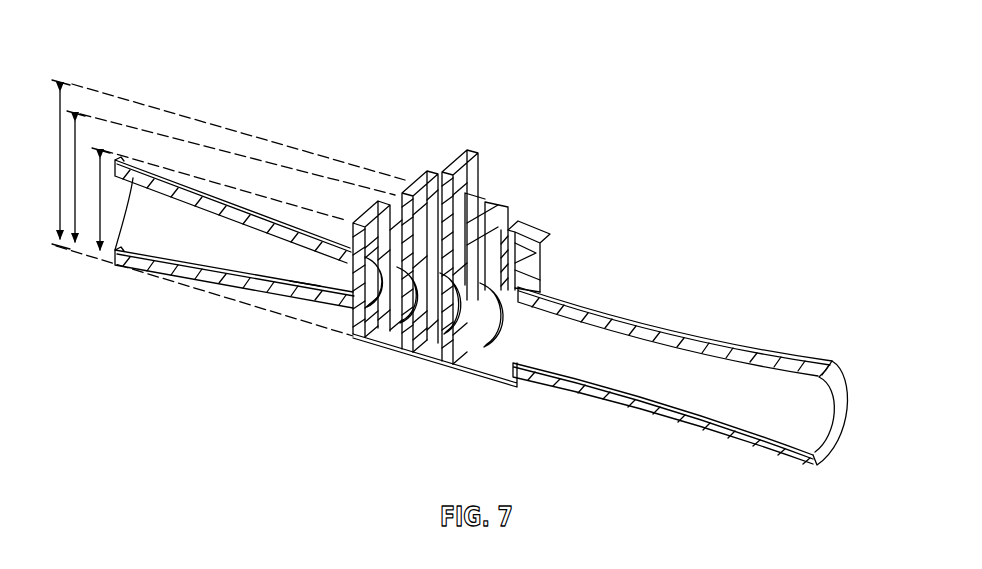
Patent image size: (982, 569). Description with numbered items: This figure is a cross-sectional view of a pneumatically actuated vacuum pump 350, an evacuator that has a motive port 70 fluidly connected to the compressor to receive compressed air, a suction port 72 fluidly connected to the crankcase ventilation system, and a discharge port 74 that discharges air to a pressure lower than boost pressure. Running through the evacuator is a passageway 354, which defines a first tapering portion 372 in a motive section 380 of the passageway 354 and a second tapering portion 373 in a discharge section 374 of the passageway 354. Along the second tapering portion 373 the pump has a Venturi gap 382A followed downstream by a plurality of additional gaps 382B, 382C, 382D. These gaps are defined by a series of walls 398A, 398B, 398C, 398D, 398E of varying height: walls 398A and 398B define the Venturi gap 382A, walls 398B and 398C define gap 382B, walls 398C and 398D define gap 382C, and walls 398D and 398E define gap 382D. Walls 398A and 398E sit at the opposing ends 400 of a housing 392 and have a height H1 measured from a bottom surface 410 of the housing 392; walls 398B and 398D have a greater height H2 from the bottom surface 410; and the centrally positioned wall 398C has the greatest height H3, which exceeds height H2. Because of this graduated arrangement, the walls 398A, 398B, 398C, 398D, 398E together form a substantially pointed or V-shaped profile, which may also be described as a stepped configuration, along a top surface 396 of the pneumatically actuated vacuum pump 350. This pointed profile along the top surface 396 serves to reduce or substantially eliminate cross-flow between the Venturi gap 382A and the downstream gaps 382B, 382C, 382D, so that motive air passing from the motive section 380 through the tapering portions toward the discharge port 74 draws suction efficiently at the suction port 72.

The pneumatically actuated vacuum pump 350 is at (708, 132).
The motive port 70 is at (136, 210).
The suction port 72 is at (531, 230).
The discharge port 74 is at (847, 398).
The first tapering portion 372 is at (187, 246).
The second tapering portion 373 is at (770, 405).
The discharge section 374 is at (586, 384).
The motive section 380 is at (301, 284).
The passageway 354 is at (232, 248).
The Venturi gap 382A is at (380, 203).
The gap 382B is at (420, 202).
The gap 382C is at (482, 205).
The gap 382D is at (532, 228).
The housing 392 is at (538, 290).
The top surface 396 is at (543, 246).
The wall 398A is at (366, 212).
The wall 398B is at (410, 186).
The wall 398C is at (453, 215).
The wall 398D is at (508, 212).
The wall 398E is at (537, 252).
The opposing ends 400 is at (337, 230).
The bottom surface 410 is at (506, 384).
The height H1 is at (97, 237).
The height H2 is at (76, 138).
The height H3 is at (60, 103).